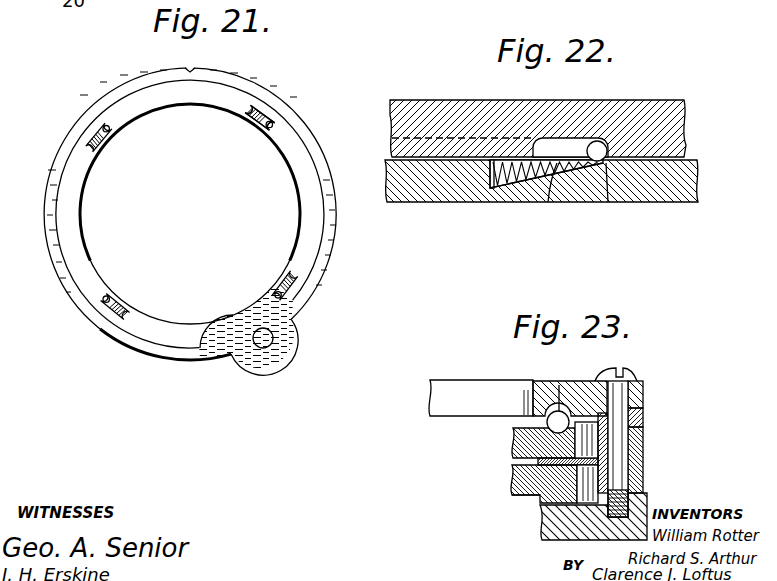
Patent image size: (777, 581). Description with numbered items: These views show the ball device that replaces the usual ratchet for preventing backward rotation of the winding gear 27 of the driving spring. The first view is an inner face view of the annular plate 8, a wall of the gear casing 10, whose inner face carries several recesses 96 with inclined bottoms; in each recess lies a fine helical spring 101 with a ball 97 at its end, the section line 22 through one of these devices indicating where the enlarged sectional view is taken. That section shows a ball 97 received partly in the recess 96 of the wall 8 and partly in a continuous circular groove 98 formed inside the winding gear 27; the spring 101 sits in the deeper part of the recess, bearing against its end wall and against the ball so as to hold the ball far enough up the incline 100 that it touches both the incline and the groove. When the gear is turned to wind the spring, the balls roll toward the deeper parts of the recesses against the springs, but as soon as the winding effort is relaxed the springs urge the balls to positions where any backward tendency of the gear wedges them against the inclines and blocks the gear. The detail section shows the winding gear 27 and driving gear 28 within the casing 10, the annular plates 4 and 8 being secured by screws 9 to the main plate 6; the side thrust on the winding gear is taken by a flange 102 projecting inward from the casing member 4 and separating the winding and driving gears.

In FIG. 21, the annular plate 8 is at (315, 295).
In FIG. 22, the annular plate 8 is at (543, 198).
In FIG. 23, the annular plate 8 is at (591, 381).
In FIG. 21, the spring recess 22 is at (247, 105).
In FIG. 21, the helical spring 101 is at (100, 141).
In FIG. 22, the helical spring 101 is at (546, 192).
In FIG. 22, the winding gear 27 is at (634, 100).
In FIG. 23, the winding gear 27 is at (517, 442).
In FIG. 22, the recess 96 is at (488, 190).
In FIG. 22, the incline 100 is at (522, 196).
In FIG. 22, the ball 97 is at (602, 170).
In FIG. 23, the ball 97 is at (559, 410).
In FIG. 22, the circular groove 98 is at (592, 141).
In FIG. 23, the screw 9 is at (641, 423).
In FIG. 23, the annular plate 4 is at (643, 452).
In FIG. 23, the gear casing 10 is at (643, 476).
In FIG. 23, the driving gear 28 is at (510, 494).
In FIG. 23, the flange 102 is at (565, 467).
In FIG. 23, the wall 6 is at (545, 531).